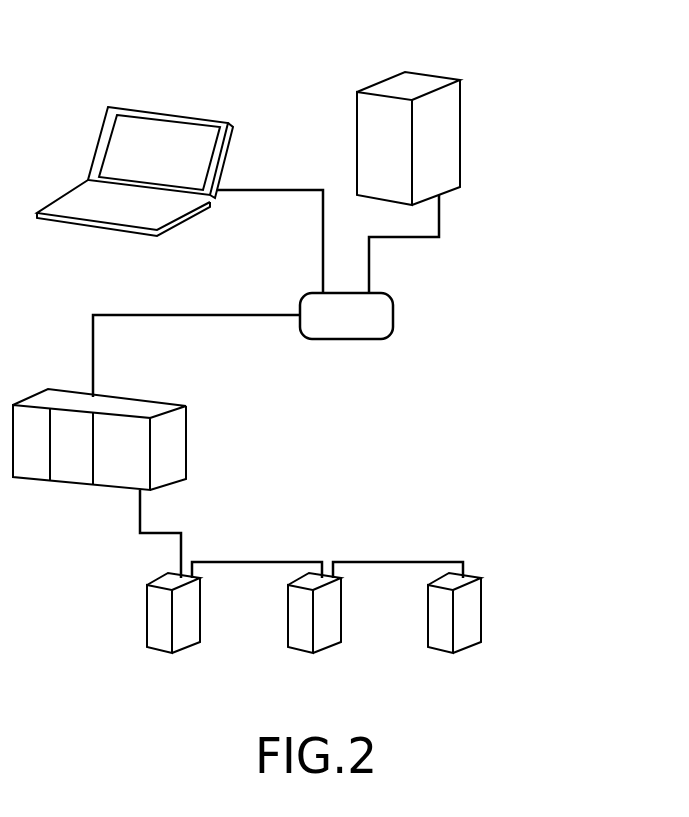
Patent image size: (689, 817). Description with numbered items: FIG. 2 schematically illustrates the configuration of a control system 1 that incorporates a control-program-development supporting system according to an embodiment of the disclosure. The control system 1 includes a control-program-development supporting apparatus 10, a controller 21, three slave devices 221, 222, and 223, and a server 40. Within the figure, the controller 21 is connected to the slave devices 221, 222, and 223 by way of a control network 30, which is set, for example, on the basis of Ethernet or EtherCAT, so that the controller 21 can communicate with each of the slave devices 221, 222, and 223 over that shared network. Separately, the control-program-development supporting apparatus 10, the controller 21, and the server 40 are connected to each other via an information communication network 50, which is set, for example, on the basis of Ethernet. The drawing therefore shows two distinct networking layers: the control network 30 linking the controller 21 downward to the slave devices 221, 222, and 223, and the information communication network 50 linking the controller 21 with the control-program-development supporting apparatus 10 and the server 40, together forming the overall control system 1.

The control system 1 is at (597, 48).
The control-program-development supporting apparatus 10 is at (220, 121).
The controller 21 is at (163, 407).
The control network 30 is at (168, 532).
The server 40 is at (435, 79).
The information communication network 50 is at (395, 298).
The slave device 221 is at (152, 618).
The slave device 222 is at (293, 618).
The slave device 223 is at (433, 618).